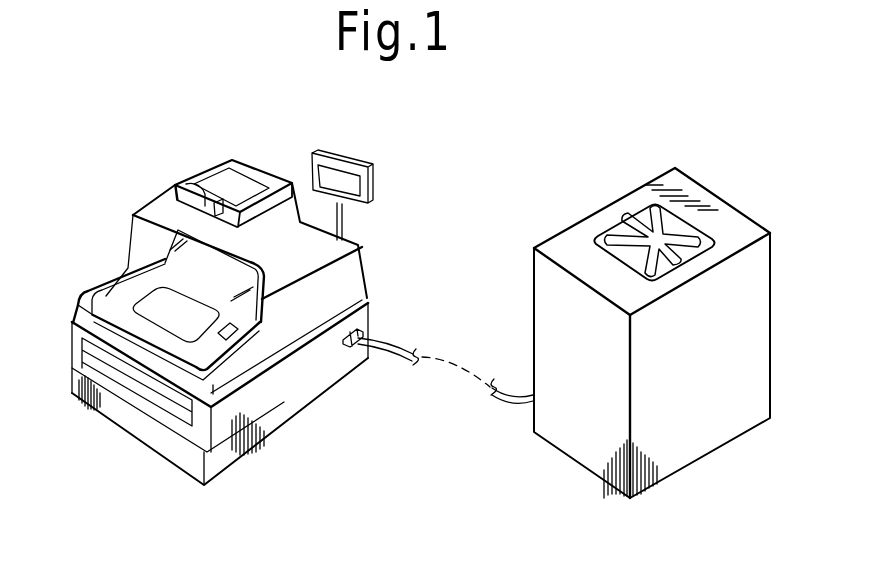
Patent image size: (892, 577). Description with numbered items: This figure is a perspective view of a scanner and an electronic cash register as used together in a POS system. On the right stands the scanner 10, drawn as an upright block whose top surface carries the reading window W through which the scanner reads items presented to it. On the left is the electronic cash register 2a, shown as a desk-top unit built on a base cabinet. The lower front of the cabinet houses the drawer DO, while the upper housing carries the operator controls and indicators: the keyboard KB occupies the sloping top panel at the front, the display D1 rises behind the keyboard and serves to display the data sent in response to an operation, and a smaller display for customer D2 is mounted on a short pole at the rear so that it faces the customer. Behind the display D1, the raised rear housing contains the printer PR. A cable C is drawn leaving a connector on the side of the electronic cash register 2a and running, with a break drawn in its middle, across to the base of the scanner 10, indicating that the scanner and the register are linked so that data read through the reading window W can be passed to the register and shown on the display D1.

The electronic cash register 2a is at (240, 132).
The scanner 10 is at (657, 137).
The printer PR is at (184, 179).
The keyboard KB is at (150, 303).
The display D1 is at (263, 255).
The display for customer D2 is at (362, 186).
The drawer DO is at (135, 398).
The cable C is at (386, 352).
The reading window W is at (612, 226).